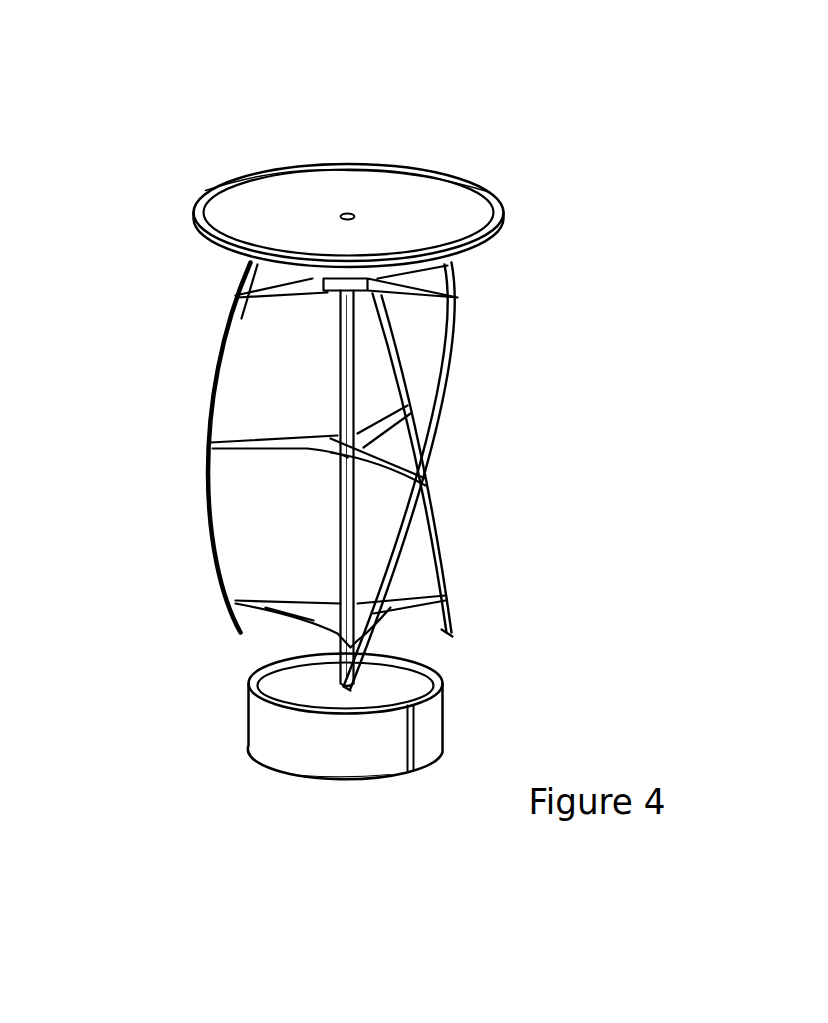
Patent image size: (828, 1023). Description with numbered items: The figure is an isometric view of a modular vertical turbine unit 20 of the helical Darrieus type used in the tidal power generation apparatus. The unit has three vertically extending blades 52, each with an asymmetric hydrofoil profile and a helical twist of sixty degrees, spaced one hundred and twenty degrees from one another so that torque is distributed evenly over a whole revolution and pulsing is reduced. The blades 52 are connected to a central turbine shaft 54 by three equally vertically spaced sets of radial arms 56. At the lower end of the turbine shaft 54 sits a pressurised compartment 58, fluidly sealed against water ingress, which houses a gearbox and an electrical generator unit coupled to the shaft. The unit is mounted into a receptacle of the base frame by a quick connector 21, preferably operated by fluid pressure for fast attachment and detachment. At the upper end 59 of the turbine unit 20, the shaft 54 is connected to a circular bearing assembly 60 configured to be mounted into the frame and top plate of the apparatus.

The modular vertical turbine unit 20 is at (557, 118).
The quick connector 21 is at (352, 777).
The blades 52 is at (207, 393).
The turbine shaft 54 is at (340, 544).
The radial arms 56 is at (268, 305).
The pressurised compartment 58 is at (430, 723).
The upper end 59 is at (503, 224).
The circular bearing assembly 60 is at (285, 172).